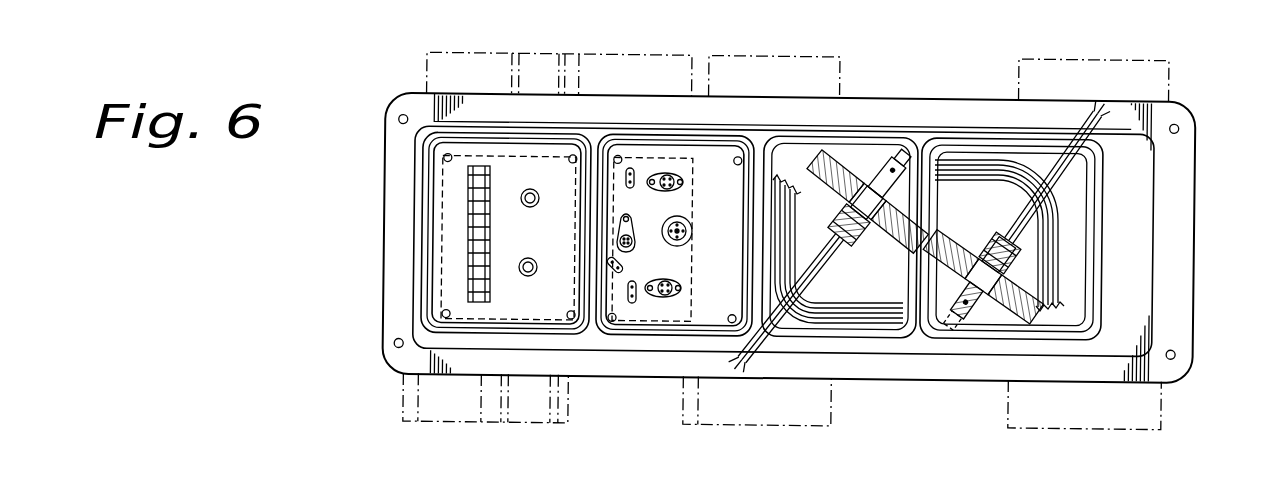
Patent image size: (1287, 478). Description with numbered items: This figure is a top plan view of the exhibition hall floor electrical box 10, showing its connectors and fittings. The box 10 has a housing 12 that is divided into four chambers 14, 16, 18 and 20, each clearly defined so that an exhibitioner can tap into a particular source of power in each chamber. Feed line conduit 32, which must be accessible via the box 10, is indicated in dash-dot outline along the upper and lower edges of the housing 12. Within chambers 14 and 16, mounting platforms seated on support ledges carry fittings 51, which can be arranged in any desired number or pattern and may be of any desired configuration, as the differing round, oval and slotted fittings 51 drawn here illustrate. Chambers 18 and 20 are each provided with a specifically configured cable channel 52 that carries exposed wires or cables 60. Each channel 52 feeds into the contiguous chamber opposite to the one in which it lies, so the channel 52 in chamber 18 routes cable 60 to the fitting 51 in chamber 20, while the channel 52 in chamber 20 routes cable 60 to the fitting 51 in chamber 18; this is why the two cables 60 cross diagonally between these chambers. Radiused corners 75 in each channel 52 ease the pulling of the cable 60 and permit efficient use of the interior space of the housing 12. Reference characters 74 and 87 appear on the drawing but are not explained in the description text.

The exhibition hall floor electrical box 10 is at (1207, 254).
The housing 12 is at (1123, 357).
The chamber 14 is at (527, 304).
The chamber 16 is at (726, 296).
The chamber 18 is at (802, 313).
The chamber 20 is at (1044, 317).
The feed line conduit 32 is at (423, 69).
The fitting 51 is at (478, 247).
The cable channel 52 is at (715, 178).
The cable 60 is at (1065, 266).
The cable conductors 74 is at (1068, 191).
The radiused corner 75 is at (847, 270).
The connector fitting 87 is at (853, 196).